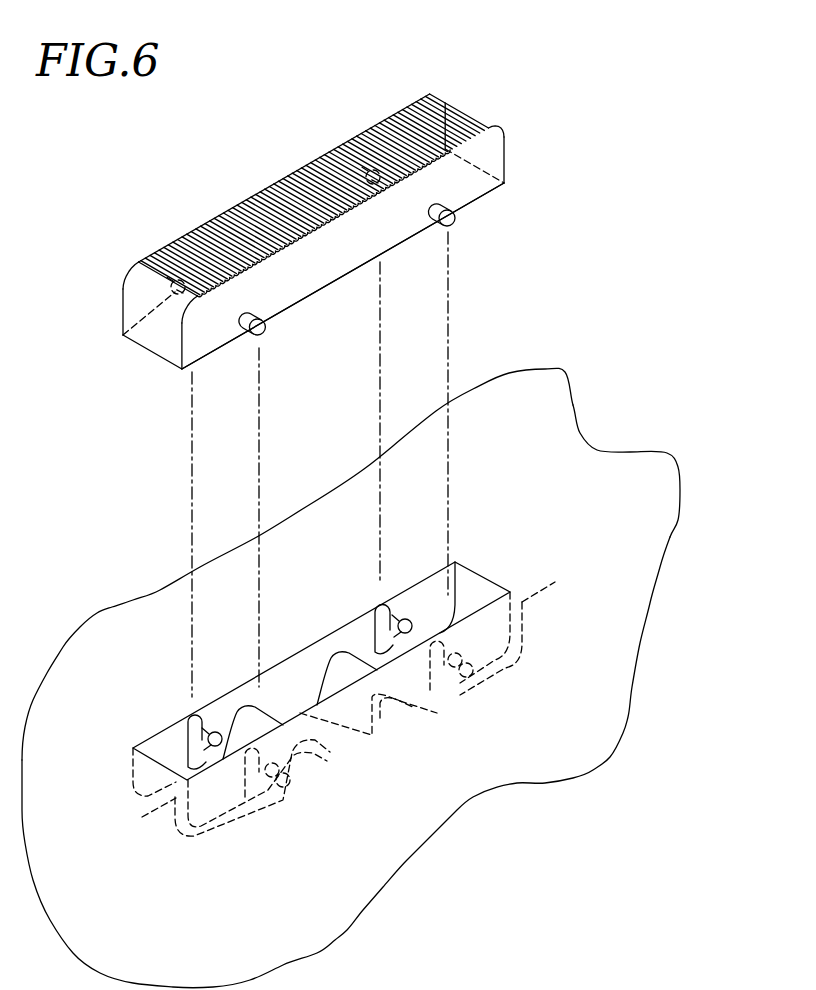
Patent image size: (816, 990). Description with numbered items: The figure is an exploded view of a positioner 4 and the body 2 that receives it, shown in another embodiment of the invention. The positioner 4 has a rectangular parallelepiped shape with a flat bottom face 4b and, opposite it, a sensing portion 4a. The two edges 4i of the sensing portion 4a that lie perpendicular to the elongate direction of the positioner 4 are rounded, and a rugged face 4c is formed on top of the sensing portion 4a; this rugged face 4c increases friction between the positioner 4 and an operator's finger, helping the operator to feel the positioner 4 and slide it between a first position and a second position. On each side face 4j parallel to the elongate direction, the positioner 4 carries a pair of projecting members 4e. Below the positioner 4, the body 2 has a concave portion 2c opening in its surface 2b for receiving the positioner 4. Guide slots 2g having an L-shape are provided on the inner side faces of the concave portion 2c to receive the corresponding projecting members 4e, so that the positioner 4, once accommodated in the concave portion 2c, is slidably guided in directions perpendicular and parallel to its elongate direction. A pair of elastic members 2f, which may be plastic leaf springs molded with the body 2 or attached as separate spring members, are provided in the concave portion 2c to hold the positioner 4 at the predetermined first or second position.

The positioner 4 is at (284, 168).
The sensing portion 4a is at (463, 113).
The flat bottom face 4b is at (295, 282).
The rugged face 4c is at (223, 226).
The projecting members 4e is at (373, 165).
The edges 4i is at (143, 289).
The side face 4j is at (302, 168).
The body 2 is at (587, 404).
The surface 2b is at (636, 470).
The concave portion 2c is at (477, 582).
The elastic members 2f is at (330, 752).
The guide slots 2g is at (195, 717).